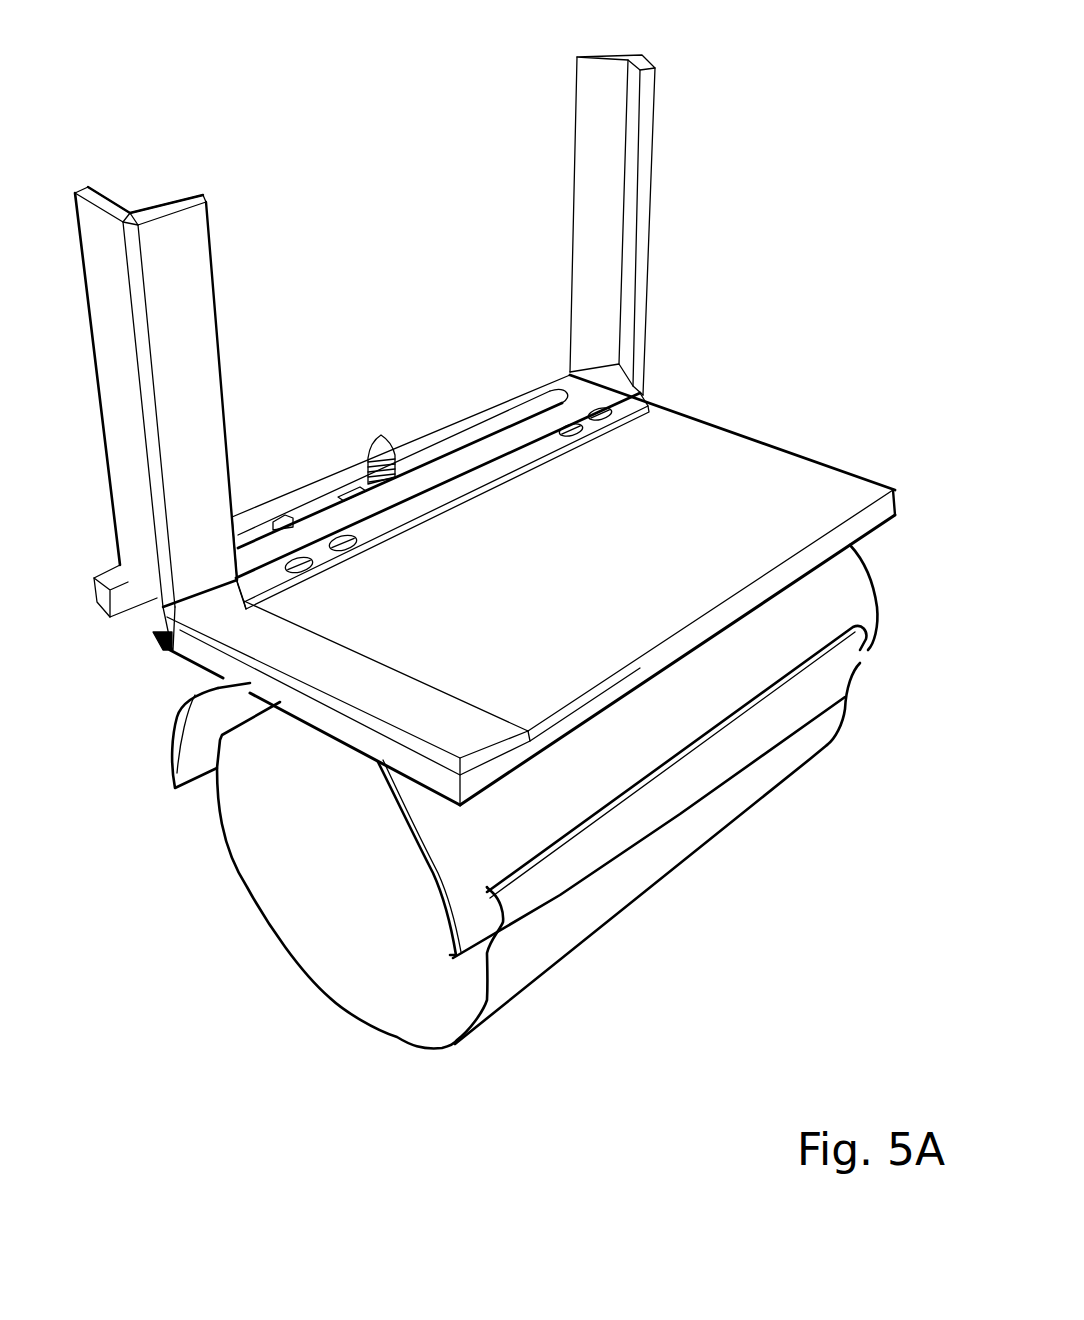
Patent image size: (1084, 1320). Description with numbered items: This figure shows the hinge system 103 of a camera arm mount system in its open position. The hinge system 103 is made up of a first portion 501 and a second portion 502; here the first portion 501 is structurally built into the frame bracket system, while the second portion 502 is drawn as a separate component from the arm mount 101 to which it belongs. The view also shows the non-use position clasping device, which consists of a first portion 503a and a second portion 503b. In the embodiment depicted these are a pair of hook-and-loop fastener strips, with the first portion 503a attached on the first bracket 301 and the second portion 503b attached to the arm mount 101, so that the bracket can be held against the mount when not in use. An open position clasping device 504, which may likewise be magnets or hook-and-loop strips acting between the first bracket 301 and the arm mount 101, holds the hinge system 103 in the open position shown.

The arm mount 101 is at (717, 428).
The hinge system 103 is at (522, 432).
The first bracket 301 is at (116, 194).
The first portion 501 is at (465, 457).
The second portion 502 is at (543, 467).
The first portion 503a is at (173, 270).
The second portion 503b is at (453, 720).
The open position clasping device 504 is at (170, 648).